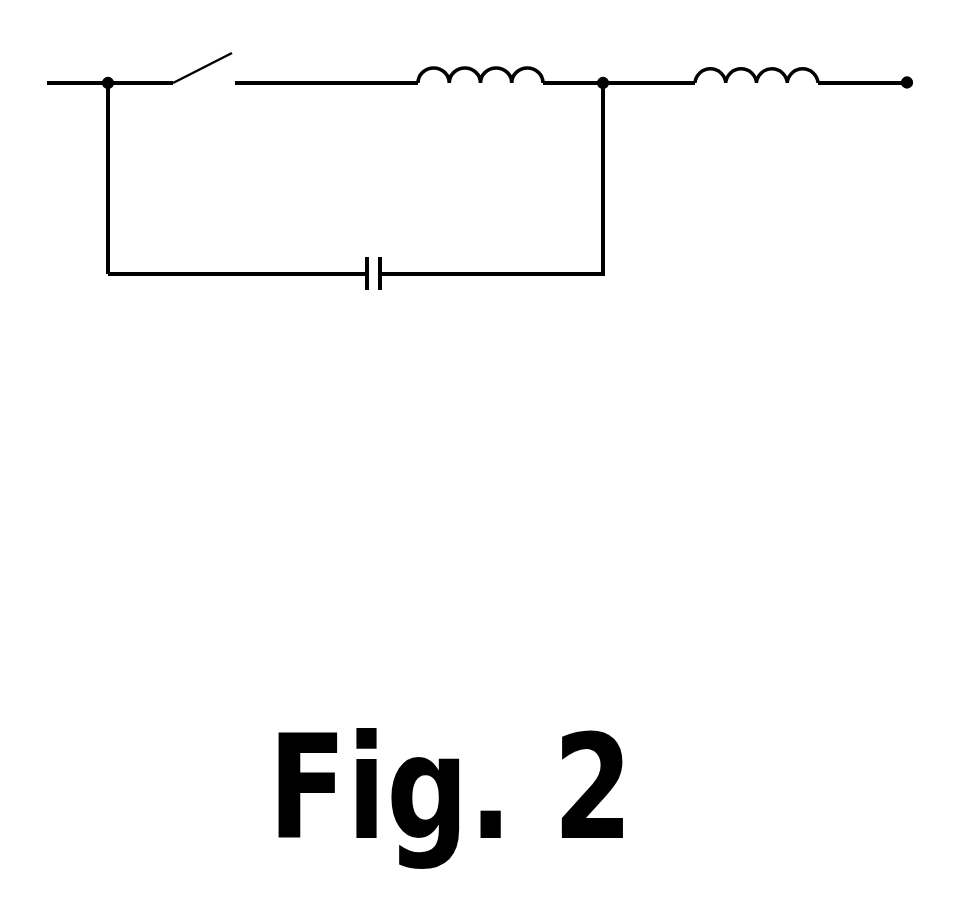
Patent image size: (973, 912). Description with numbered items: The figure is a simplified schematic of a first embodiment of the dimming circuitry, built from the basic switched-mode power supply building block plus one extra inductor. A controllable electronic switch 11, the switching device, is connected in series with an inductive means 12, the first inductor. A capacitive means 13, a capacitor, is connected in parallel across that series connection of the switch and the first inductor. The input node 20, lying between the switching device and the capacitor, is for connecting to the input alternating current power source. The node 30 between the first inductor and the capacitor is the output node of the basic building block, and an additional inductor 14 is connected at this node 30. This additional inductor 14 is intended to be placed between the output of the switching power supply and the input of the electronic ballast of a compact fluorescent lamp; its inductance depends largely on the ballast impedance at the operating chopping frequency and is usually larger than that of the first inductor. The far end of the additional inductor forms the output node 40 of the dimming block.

The controllable electronic switch 11 is at (202, 80).
The inductive means 12 is at (480, 78).
The capacitive means 13 is at (382, 270).
The additional inductor 14 is at (756, 76).
The input node 20 is at (97, 59).
The output node of the basic building block 30 is at (600, 58).
The output node of the dimming block 40 is at (927, 79).